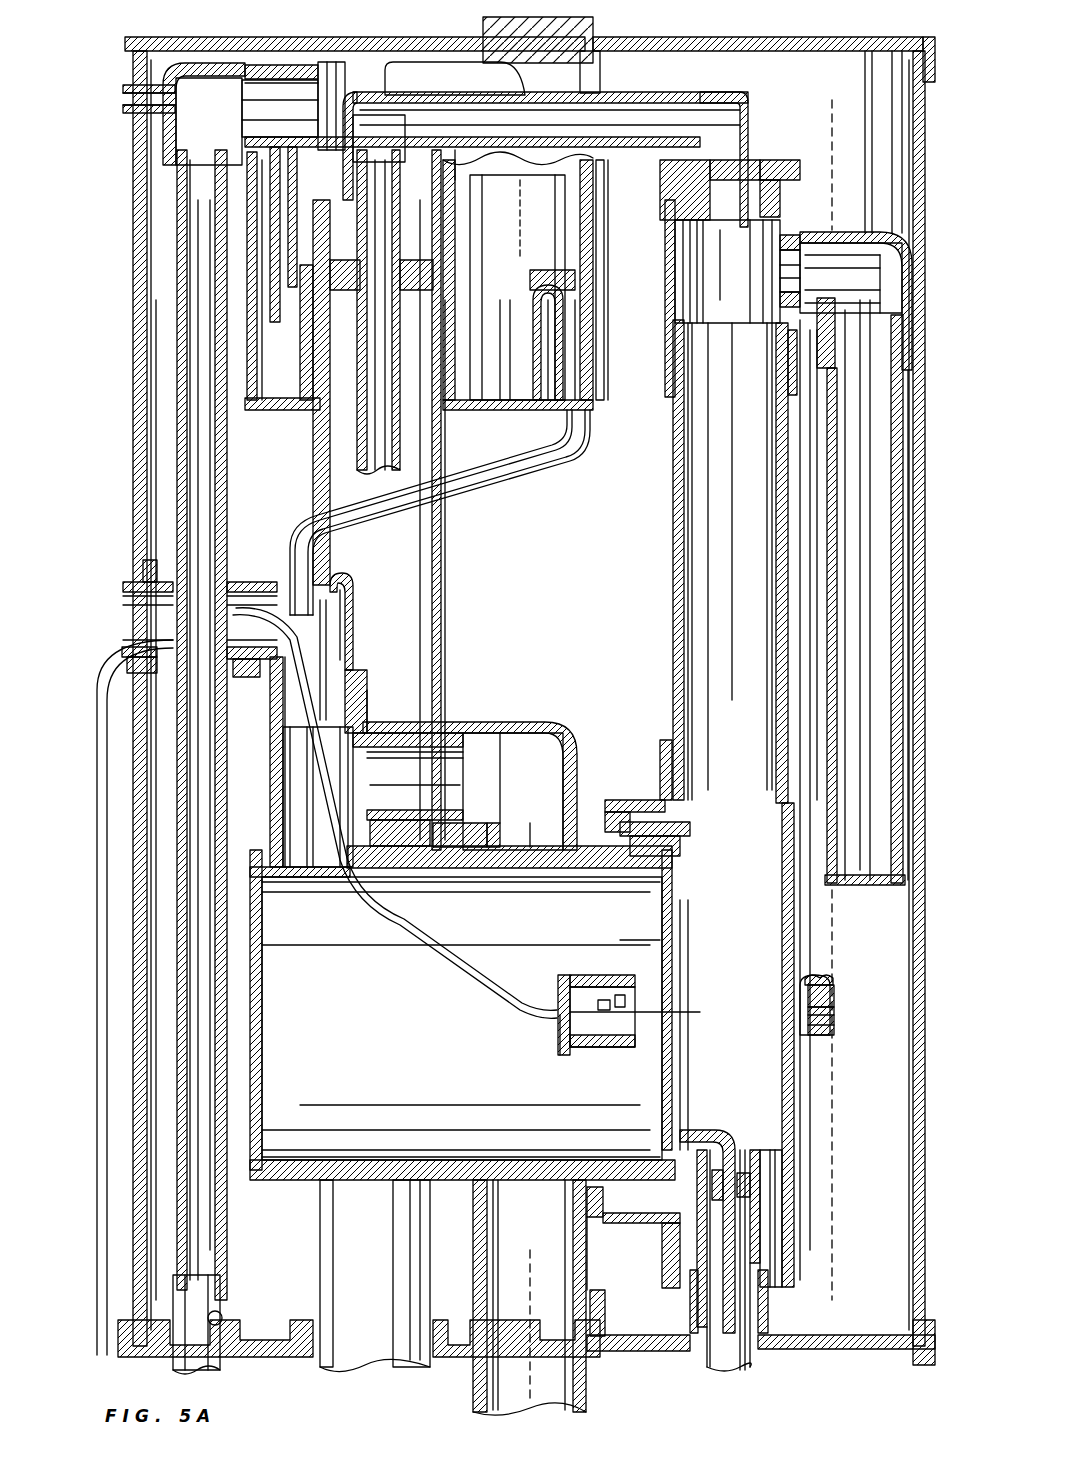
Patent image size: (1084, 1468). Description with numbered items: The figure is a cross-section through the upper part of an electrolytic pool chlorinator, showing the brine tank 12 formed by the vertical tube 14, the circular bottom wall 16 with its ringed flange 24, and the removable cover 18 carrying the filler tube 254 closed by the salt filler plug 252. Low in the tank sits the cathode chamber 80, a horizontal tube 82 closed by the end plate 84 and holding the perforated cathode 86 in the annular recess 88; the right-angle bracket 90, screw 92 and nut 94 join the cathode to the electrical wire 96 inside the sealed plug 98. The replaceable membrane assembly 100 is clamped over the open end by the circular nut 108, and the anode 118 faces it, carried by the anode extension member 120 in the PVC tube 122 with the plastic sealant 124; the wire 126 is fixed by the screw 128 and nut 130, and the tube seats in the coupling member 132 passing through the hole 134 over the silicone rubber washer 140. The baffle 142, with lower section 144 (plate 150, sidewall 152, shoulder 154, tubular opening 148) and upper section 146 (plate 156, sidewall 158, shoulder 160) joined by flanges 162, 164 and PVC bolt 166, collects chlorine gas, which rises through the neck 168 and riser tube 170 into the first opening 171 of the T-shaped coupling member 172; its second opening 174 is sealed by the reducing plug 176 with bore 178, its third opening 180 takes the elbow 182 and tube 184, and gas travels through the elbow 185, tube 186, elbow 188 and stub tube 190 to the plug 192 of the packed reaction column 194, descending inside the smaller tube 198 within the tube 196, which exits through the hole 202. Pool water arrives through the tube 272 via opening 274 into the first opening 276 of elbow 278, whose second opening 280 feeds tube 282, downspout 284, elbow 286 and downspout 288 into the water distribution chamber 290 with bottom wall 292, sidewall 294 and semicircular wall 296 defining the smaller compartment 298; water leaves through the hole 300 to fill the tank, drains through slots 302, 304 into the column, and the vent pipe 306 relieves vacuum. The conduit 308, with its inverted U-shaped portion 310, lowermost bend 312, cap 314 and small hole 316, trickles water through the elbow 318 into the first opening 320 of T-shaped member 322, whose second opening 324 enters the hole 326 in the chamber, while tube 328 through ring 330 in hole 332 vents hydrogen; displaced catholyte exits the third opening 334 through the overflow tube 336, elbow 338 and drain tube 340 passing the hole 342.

The brine tank 12 is at (631, 500).
The vertically oriented tube 14 is at (133, 345).
The circular bottom wall 16 is at (300, 1345).
The removable cover 18 is at (735, 45).
The ringed flange 24 is at (936, 1335).
The cathode chamber 80 is at (300, 1196).
The horizontally-oriented polyvinyl chloride tube 82 is at (620, 758).
The circular end plate 84 is at (268, 1010).
The circular cathode 86 is at (660, 925).
The annular recess 88 is at (650, 870).
The right-angle bracket 90 is at (643, 1050).
The screw 92 is at (600, 1050).
The nut 94 is at (606, 998).
The electrical wire 96 is at (535, 1025).
The polyvinyl chloride plug 98 is at (558, 985).
The replaceable membrane assembly 100 is at (685, 882).
The circular nut 108 is at (665, 835).
The anode 118 is at (690, 958).
The anode extension member 120 is at (712, 1130).
The PVC tube 122 is at (762, 1145).
The plastic sealant 124 is at (760, 1235).
The electrical wire 126 is at (745, 1310).
The screw 128 is at (760, 1185).
The nut 130 is at (712, 1190).
The PVC coupling member 132 is at (770, 1330).
The hole 134 is at (762, 1360).
The silicone rubber washer 140 is at (675, 1351).
The baffle 142 is at (822, 965).
The lower baffle section 144 is at (820, 1088).
The upper baffle section 146 is at (800, 920).
The tubular opening 148 is at (680, 1290).
The semicircular plate 150 is at (794, 1252).
The semicylindrical sidewall 152 is at (662, 1260).
The annular shoulder 154 is at (620, 1225).
The semicircular plate 156 is at (836, 790).
The semicylindrical sidewall 158 is at (660, 772).
The annular shoulder 160 is at (605, 812).
The flange 162 is at (840, 1018).
The flange 164 is at (840, 992).
The PVC bolt 166 is at (833, 975).
The tubular neck 168 is at (777, 745).
The chlorine gas riser tube 170 is at (668, 505).
The first longitudinal opening 171 is at (668, 400).
The T-shaped coupling member 172 is at (665, 310).
The second longitudinal opening 174 is at (800, 170).
The reducing plug 176 is at (770, 160).
The reduced diameter bore 178 is at (728, 215).
The third opening 180 is at (800, 235).
The elbow member 182 is at (912, 250).
The PVC tube 184 is at (905, 485).
The elbow member 185 is at (762, 100).
The horizontally-oriented PVC tube 186 is at (585, 92).
The elbow 188 is at (353, 132).
The stub tube 190 is at (340, 195).
The plug 192 is at (460, 258).
The packed reaction column 194 is at (445, 598).
The vertically-oriented tube 196 is at (441, 535).
The smaller vertical tube 198 is at (400, 430).
The hole 202 is at (333, 1295).
The salt filler plug 252 is at (595, 20).
The filler tube 254 is at (600, 75).
The vertically-oriented PVC tube 272 is at (215, 1290).
The opening 274 is at (222, 1316).
The first opening 276 is at (177, 215).
The elbow member 278 is at (215, 63).
The second opening 280 is at (295, 65).
The horizontally-oriented PVC tube 282 is at (345, 62).
The downspout 284 is at (262, 160).
The elbow 286 is at (440, 62).
The downspout 288 is at (552, 262).
The water distribution chamber 290 is at (600, 208).
The bottom wall 292 is at (262, 410).
The sidewall 294 is at (604, 250).
The semicircular wall 296 is at (278, 398).
The smaller compartment 298 is at (305, 260).
The hole 300 is at (215, 295).
The slot 302 is at (333, 275).
The slot 304 is at (530, 290).
The vent pipe 306 is at (123, 110).
The conduit 308 is at (545, 462).
The inverted U-shaped portion 310 is at (565, 295).
The lowermost bend 312 is at (593, 325).
The cap 314 is at (550, 410).
The small hole 316 is at (530, 338).
The elbow member 318 is at (355, 582).
The first longitudinal opening 320 is at (355, 660).
The T-shaped member 322 is at (369, 700).
The second longitudinal opening 324 is at (305, 868).
The circular hole 326 is at (385, 880).
The horizontally-oriented tube 328 is at (148, 560).
The annular ring 330 is at (140, 580).
The hole 332 is at (127, 675).
The third opening 334 is at (450, 733).
The overflow tube 336 is at (470, 722).
The elbow 338 is at (565, 724).
The drain tube 340 is at (488, 1260).
The hole 342 is at (488, 1330).